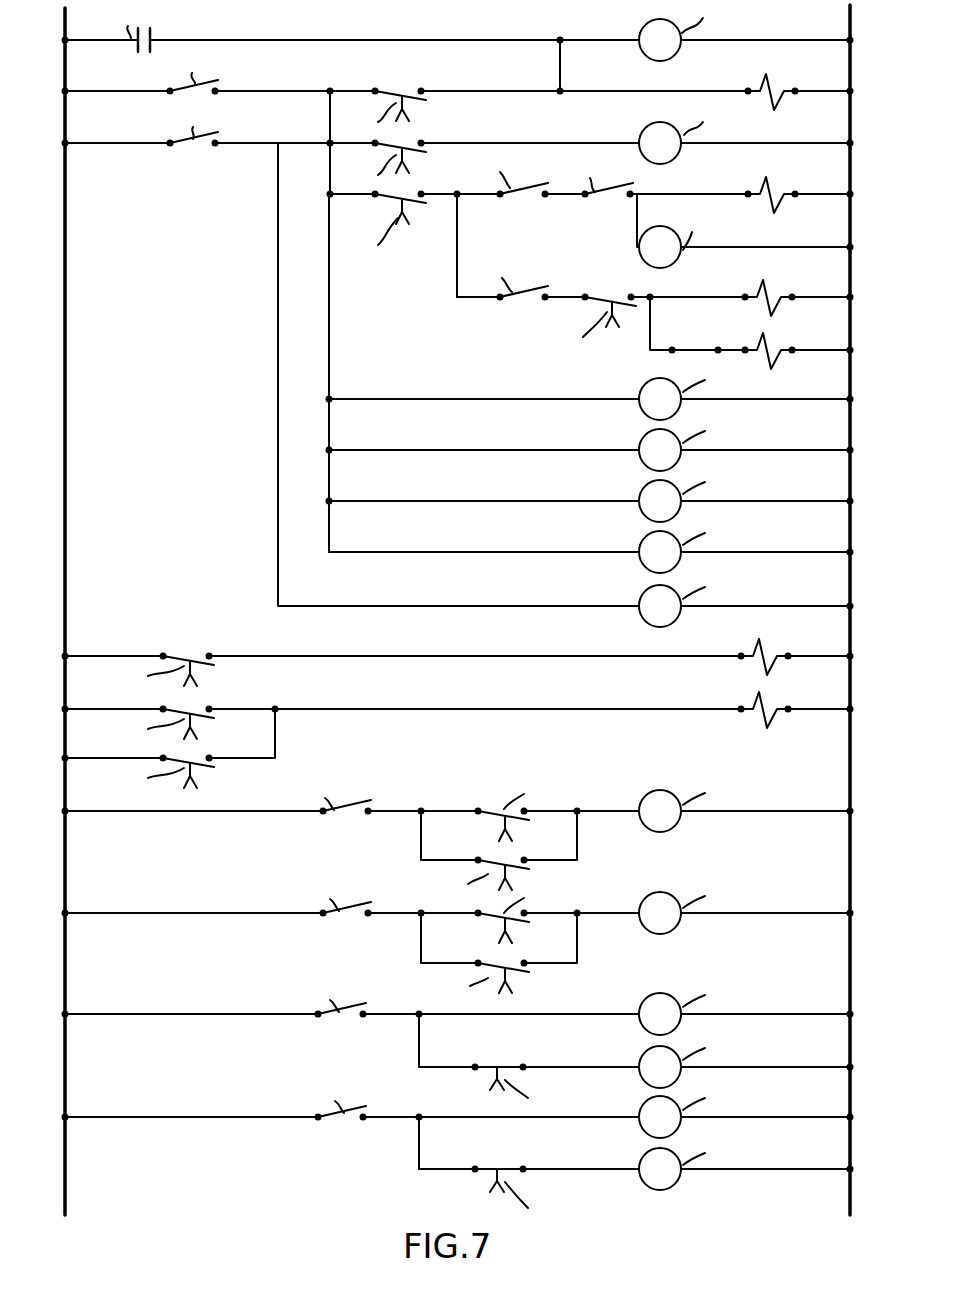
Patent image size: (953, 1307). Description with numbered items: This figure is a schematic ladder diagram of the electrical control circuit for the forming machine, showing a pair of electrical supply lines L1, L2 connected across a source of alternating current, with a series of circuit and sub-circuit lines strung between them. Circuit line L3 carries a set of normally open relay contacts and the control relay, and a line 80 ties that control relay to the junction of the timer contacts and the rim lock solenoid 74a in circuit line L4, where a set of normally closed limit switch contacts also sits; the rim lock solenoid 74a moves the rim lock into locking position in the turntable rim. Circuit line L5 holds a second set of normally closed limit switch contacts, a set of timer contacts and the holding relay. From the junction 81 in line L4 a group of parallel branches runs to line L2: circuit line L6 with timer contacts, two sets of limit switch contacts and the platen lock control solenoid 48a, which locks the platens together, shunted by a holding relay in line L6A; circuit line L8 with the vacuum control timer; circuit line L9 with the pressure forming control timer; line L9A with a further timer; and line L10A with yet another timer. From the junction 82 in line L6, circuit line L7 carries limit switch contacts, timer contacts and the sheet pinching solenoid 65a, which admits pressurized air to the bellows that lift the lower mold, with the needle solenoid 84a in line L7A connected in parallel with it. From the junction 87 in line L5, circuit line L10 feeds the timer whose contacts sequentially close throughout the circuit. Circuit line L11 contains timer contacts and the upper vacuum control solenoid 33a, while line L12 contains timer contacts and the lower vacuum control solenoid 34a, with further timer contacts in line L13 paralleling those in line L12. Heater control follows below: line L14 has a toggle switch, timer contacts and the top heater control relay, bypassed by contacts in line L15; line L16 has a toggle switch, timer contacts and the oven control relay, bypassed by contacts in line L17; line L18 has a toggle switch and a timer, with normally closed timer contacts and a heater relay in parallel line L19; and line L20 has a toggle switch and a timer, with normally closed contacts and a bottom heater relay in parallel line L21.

The line 80 is at (560, 60).
The junction 81 is at (332, 88).
The junction 82 is at (458, 196).
The junction 87 is at (278, 182).
The rim lock solenoid 74a is at (773, 100).
The platen lock control solenoid 48a is at (776, 200).
The sheet pinching solenoid 65a is at (774, 303).
The solenoid 84a is at (785, 358).
The vacuum control solenoid 33a is at (772, 665).
The lower vacuum control solenoid 34a is at (772, 718).
The electrical supply line L1 is at (63, 24).
The electrical supply line L2 is at (852, 22).
The circuit line L3 is at (305, 39).
The circuit line L4 is at (307, 90).
The circuit line L5 is at (300, 142).
The circuit line L6 is at (350, 200).
The circuit line L6A is at (715, 247).
The circuit line L7 is at (462, 300).
The circuit line L7A is at (850, 350).
The circuit line L8 is at (465, 399).
The circuit line L9 is at (462, 450).
The circuit line L9A is at (488, 501).
The circuit line L10 is at (480, 606).
The circuit line L10A is at (500, 552).
The circuit line L11 is at (475, 654).
The circuit line L12 is at (475, 707).
The circuit line L13 is at (271, 755).
The circuit line L14 is at (410, 808).
The circuit line L15 is at (445, 859).
The circuit line L16 is at (383, 906).
The circuit line L17 is at (556, 965).
The circuit line L18 is at (252, 1014).
The circuit line L19 is at (444, 1066).
The circuit line L20 is at (267, 1115).
The circuit line L21 is at (444, 1168).